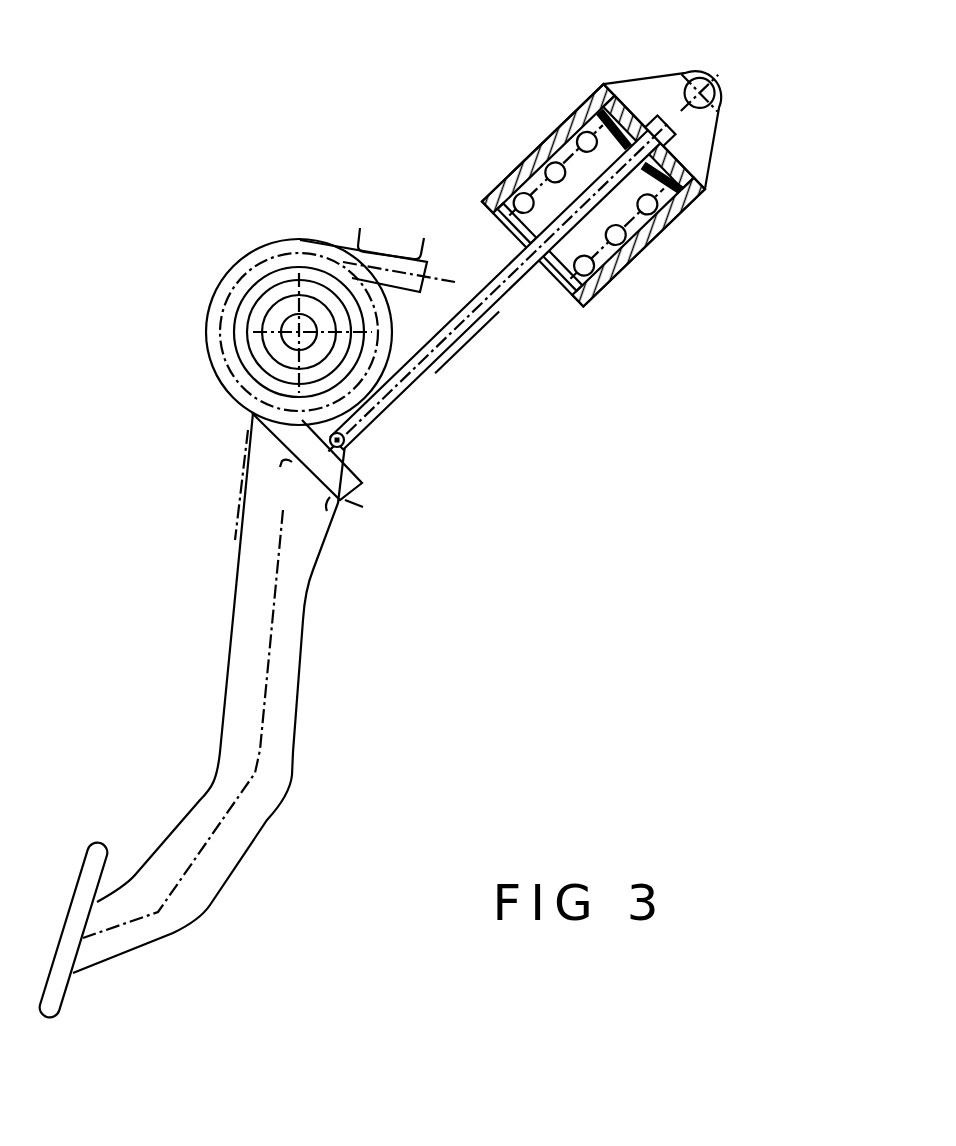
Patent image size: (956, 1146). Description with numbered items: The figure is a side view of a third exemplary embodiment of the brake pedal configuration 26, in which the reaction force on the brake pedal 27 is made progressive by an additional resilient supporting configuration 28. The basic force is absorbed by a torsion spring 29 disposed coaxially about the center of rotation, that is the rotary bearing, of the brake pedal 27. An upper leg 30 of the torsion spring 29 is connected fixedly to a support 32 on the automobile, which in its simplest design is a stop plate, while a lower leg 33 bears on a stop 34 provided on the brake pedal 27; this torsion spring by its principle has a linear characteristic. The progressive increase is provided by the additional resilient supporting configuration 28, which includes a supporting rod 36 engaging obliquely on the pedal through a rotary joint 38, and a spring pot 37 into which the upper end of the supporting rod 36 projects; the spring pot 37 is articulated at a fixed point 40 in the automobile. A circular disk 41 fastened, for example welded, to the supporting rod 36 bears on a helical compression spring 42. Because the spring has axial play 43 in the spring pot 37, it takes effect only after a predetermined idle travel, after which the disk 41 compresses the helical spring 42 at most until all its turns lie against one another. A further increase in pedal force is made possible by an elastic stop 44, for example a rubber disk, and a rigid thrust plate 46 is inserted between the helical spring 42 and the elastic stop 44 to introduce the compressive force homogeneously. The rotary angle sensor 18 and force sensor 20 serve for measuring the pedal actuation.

The rotary angle sensor 18 is at (254, 333).
The force sensor 20 is at (232, 530).
The brake pedal configuration 26 is at (165, 122).
The brake pedal 27 is at (222, 660).
The additional resilient supporting configuration 28 is at (460, 197).
The torsion spring 29 is at (215, 292).
The upper leg 30 is at (300, 240).
The support 32 is at (402, 240).
The lower leg 33 is at (323, 470).
The stop 34 is at (300, 467).
The supporting rod 36 is at (505, 292).
The spring pot 37 is at (692, 173).
The rotary joint 38 is at (345, 440).
The fixed point 40 is at (706, 90).
The circular disk 41 is at (527, 222).
The helical spring 42 is at (660, 237).
The axial play 43 is at (593, 120).
The elastic stop 44 is at (680, 180).
The rigid thrust plate 46 is at (697, 198).